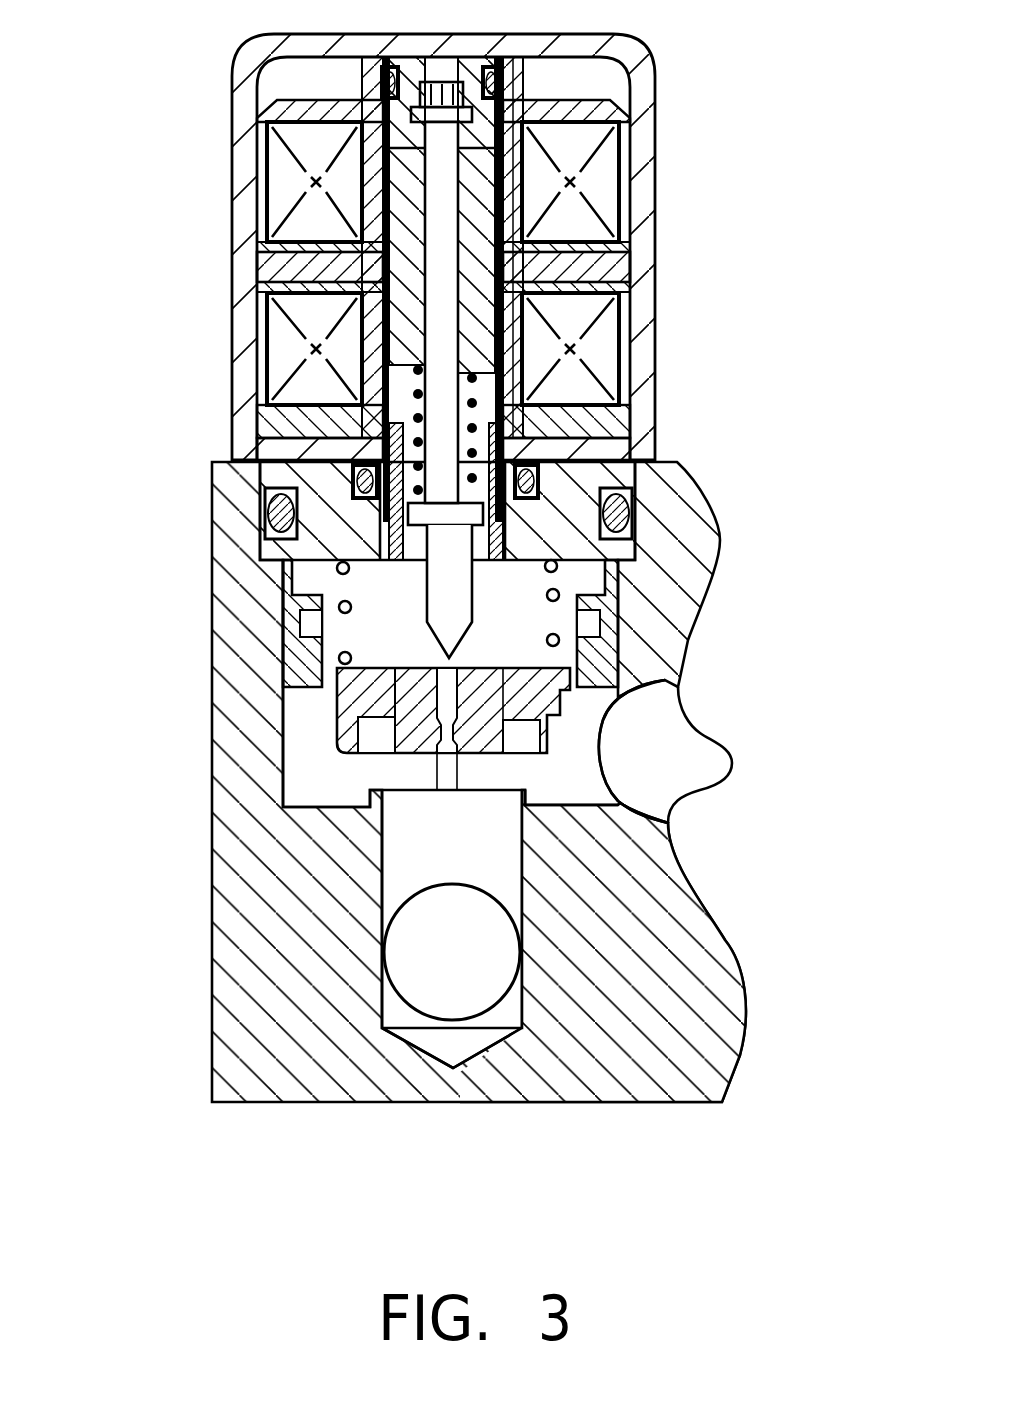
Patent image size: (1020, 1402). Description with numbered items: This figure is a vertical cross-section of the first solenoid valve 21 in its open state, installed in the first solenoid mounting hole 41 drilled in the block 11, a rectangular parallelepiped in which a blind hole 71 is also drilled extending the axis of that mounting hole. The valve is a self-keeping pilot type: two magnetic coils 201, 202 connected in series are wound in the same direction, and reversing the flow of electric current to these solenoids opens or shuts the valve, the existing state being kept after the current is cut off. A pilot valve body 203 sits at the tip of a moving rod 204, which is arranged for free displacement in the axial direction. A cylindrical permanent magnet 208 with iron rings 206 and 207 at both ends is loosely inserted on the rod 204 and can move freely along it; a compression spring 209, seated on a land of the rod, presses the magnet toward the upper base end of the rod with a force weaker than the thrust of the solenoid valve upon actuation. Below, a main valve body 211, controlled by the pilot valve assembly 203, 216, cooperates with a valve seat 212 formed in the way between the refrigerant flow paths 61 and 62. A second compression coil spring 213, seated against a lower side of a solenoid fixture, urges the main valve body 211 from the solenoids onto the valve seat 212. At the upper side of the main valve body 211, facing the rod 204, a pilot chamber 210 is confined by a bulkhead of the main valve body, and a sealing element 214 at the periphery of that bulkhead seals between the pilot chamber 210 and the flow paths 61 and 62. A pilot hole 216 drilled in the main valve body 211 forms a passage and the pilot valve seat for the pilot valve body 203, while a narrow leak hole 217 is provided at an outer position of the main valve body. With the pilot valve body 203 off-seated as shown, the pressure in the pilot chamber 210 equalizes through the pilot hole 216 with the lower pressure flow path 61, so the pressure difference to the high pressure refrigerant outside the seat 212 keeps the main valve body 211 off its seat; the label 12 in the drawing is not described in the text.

The first solenoid valve 21 is at (692, 57).
The iron ring 206 is at (488, 132).
The solenoid coil 202 is at (275, 185).
The moving rod 204 is at (447, 225).
The cylindrical permanent magnet 208 is at (477, 275).
The solenoid coil 201 is at (287, 346).
The iron ring 207 is at (500, 360).
The compression spring 209 is at (477, 455).
The pilot chamber 210 is at (620, 575).
The sealing element 214 is at (612, 637).
The refrigerant flow path 62 is at (665, 686).
The passage 12 is at (730, 744).
The valve seat 212 is at (660, 882).
The second compression coil spring 213 is at (340, 602).
The pilot valve body 203 is at (440, 628).
The narrow leak hole 217 is at (350, 718).
The pilot hole 216 is at (395, 750).
The first solenoid mounting hole 41 is at (283, 793).
The main valve body 211 is at (420, 745).
The blind hole 71 is at (383, 897).
The refrigerant flow path 61 is at (418, 1013).
The block 11 is at (578, 1083).